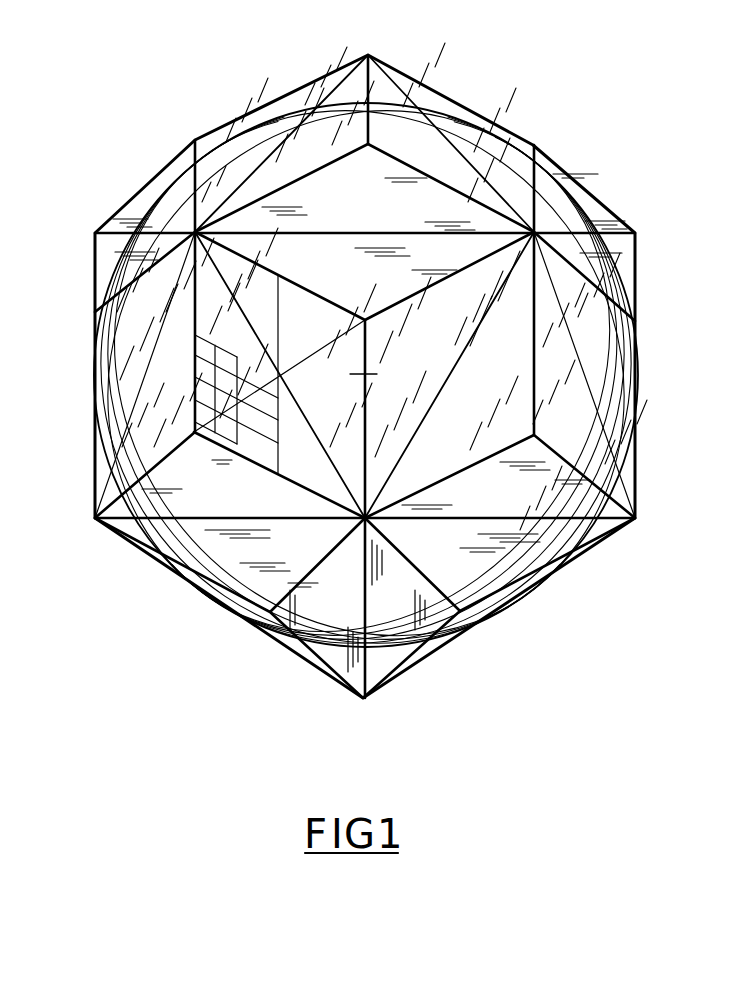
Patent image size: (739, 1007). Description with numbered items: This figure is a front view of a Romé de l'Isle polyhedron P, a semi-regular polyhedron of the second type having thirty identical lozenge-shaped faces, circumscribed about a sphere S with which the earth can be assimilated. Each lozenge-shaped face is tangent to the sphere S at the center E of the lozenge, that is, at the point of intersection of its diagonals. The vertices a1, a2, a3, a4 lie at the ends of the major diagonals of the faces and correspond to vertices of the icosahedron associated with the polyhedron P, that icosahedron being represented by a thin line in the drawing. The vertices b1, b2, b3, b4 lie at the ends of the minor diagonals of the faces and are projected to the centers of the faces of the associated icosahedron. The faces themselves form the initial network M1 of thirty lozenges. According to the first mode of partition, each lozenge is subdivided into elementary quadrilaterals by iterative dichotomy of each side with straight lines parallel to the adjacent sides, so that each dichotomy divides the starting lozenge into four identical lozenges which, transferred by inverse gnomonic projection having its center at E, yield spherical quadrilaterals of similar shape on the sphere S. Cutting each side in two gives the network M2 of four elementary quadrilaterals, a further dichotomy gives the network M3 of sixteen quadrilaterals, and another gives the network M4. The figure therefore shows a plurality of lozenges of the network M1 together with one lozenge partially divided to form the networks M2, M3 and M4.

The Romé de l'Isle polyhedron P is at (459, 102).
The sphere S is at (562, 196).
The vertex at end of major diagonal a1 is at (534, 232).
The vertex at end of major diagonal a2 is at (362, 522).
The vertex at end of major diagonal a3 is at (194, 231).
The vertex at end of major diagonal a4 is at (371, 60).
The vertex at end of minor diagonal b1 is at (366, 318).
The vertex at end of minor diagonal b2 is at (535, 436).
The vertex at end of minor diagonal b3 is at (368, 148).
The vertex at end of minor diagonal b4 is at (194, 435).
The center of the lozenge E is at (279, 374).
The initial network of thirty lozenges M1 is at (430, 276).
The second network M2 is at (244, 283).
The third network M3 is at (267, 398).
The fourth network M4 is at (200, 394).